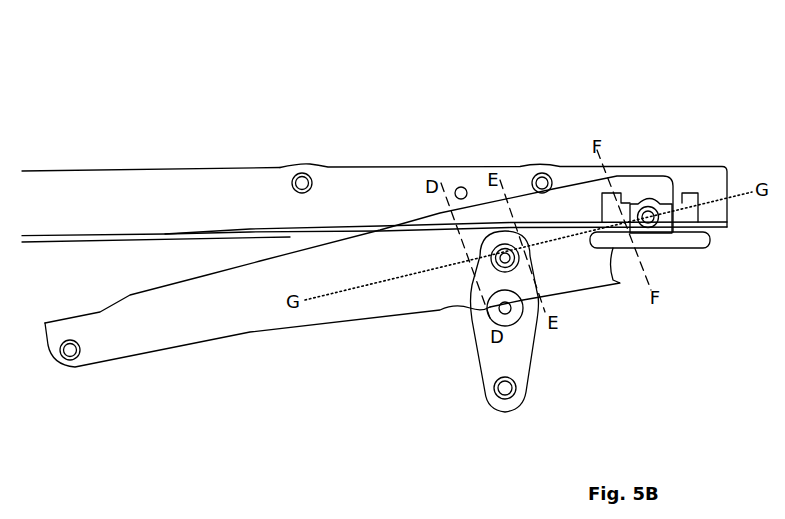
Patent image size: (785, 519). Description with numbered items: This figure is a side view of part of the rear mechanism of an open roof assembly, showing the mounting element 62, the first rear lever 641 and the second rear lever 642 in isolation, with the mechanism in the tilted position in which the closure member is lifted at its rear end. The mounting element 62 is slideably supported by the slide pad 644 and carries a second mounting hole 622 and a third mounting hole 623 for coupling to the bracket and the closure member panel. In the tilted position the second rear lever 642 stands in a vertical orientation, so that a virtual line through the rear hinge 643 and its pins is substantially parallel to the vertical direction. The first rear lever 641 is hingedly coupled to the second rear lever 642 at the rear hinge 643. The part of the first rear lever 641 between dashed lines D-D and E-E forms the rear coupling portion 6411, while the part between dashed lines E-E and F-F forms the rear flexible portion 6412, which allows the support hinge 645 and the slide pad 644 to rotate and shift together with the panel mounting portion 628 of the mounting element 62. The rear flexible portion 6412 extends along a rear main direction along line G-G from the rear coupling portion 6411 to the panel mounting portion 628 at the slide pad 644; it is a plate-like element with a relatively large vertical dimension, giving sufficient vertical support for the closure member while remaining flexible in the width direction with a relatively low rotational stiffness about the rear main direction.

The mounting element 62 is at (129, 213).
The panel mounting portion 628 is at (208, 162).
The second mounting hole 622 is at (300, 173).
The third mounting hole 623 is at (541, 172).
The rear coupling portion 6411 is at (478, 192).
The first rear lever 641 is at (245, 306).
The rear flexible portion 6412 is at (601, 293).
The second rear lever 642 is at (481, 360).
The rear hinge 643 is at (496, 262).
The slide pad 644 is at (721, 166).
The support hinge 645 is at (654, 207).